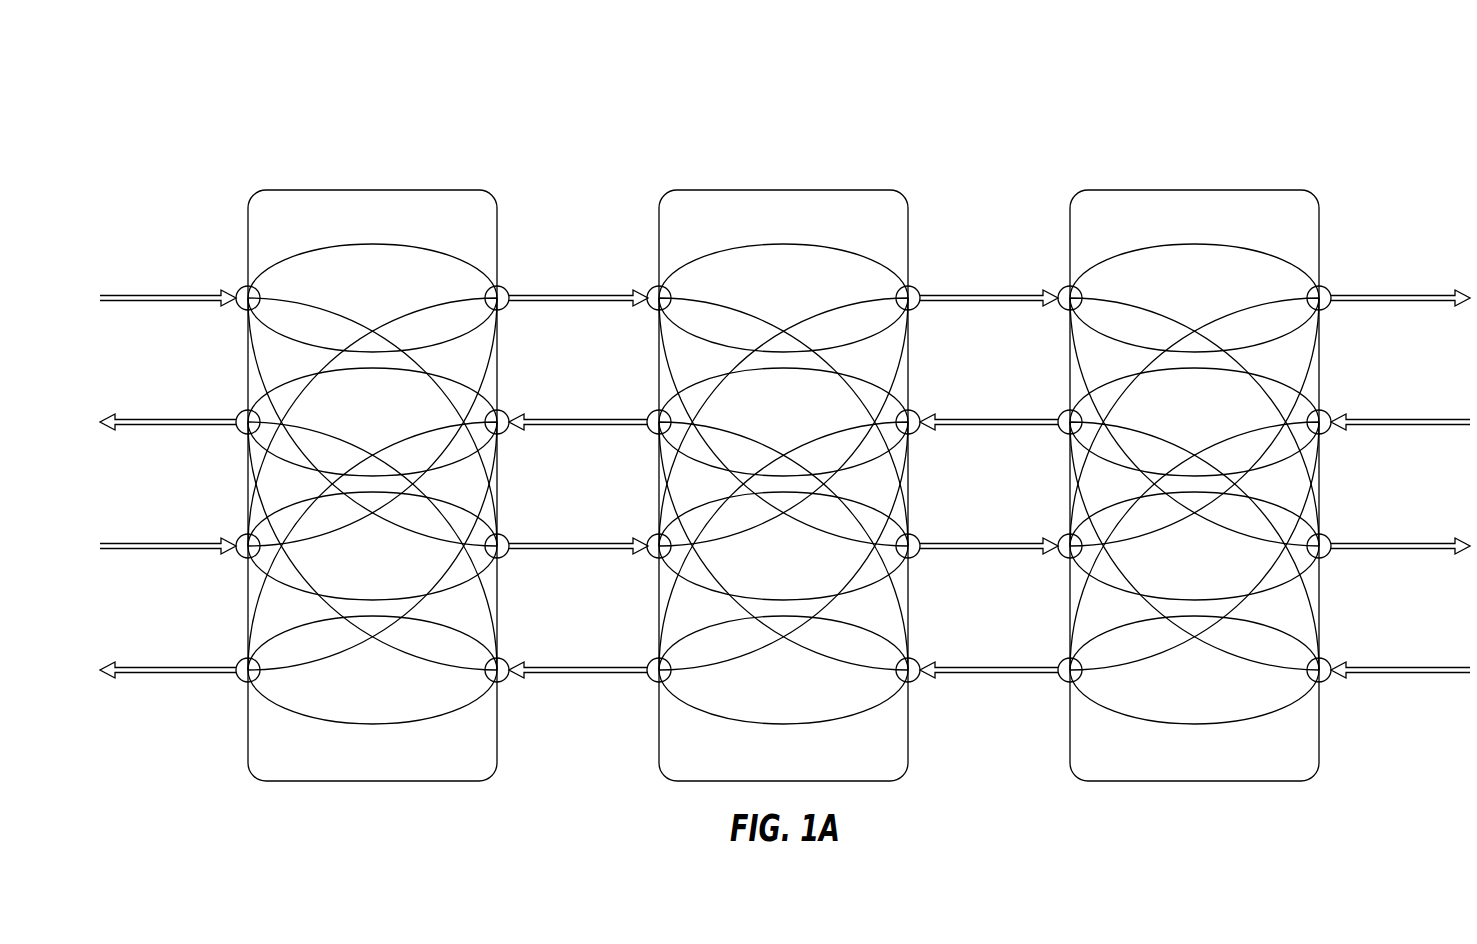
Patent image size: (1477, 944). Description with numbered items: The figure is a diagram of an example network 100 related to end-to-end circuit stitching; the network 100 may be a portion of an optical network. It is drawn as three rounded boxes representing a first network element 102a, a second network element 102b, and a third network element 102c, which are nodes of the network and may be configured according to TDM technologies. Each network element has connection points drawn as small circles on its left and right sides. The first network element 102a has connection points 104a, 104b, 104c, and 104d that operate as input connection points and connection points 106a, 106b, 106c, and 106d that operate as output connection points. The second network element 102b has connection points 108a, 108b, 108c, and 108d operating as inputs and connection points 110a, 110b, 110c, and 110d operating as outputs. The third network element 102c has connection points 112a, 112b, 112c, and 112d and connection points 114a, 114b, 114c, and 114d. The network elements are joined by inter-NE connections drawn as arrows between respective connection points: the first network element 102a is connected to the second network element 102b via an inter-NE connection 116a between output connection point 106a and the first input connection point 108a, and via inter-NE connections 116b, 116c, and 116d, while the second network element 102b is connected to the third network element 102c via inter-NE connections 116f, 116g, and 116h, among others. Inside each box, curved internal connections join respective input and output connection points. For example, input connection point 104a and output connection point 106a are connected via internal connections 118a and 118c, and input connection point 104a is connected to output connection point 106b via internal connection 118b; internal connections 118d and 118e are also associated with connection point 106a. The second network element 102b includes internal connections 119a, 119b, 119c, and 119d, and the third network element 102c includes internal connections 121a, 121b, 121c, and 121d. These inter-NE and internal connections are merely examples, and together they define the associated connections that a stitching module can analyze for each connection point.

The network 100 is at (1313, 96).
The first network element 102a is at (497, 200).
The second network element 102b is at (908, 200).
The third network element 102c is at (1319, 200).
The connection point 104a is at (240, 288).
The connection point 104b is at (240, 536).
The connection point 104c is at (505, 413).
The connection point 104d is at (505, 660).
The connection point 106a is at (505, 288).
The connection point 106b is at (505, 536).
The connection point 106c is at (240, 413).
The connection point 106d is at (240, 660).
The connection point 108a is at (651, 308).
The connection point 108b is at (651, 556).
The connection point 108c is at (916, 413).
The connection point 108d is at (916, 660).
The connection point 110a is at (916, 288).
The connection point 110b is at (916, 536).
The connection point 110c is at (651, 432).
The connection point 110d is at (651, 680).
The connection point 112a is at (988, 293).
The connection point 112b is at (1061, 556).
The connection point 112c is at (1327, 413).
The connection point 112d is at (1327, 660).
The connection point 114a is at (1327, 288).
The connection point 114b is at (1327, 536).
The connection point 114c is at (1061, 432).
The connection point 114d is at (1061, 680).
The inter-NE connection 116a is at (578, 293).
The inter-NE connection 116b is at (578, 417).
The inter-NE connection 116c is at (578, 541).
The inter-NE connection 116d is at (578, 665).
The inter-NE connection 116f is at (988, 417).
The inter-NE connection 116g is at (988, 541).
The inter-NE connection 116h is at (988, 665).
The internal connection 118a is at (380, 245).
The internal connection 118b is at (288, 293).
The internal connection 118c is at (452, 338).
The internal connection 118d is at (410, 310).
The internal connection 118e is at (497, 385).
The internal connection 119a is at (792, 245).
The internal connection 119b is at (701, 293).
The internal connection 119c is at (864, 338).
The internal connection 119d is at (658, 385).
The internal connection 121a is at (1202, 245).
The internal connection 121b is at (1111, 293).
The internal connection 121c is at (1274, 338).
The internal connection 121d is at (1069, 385).